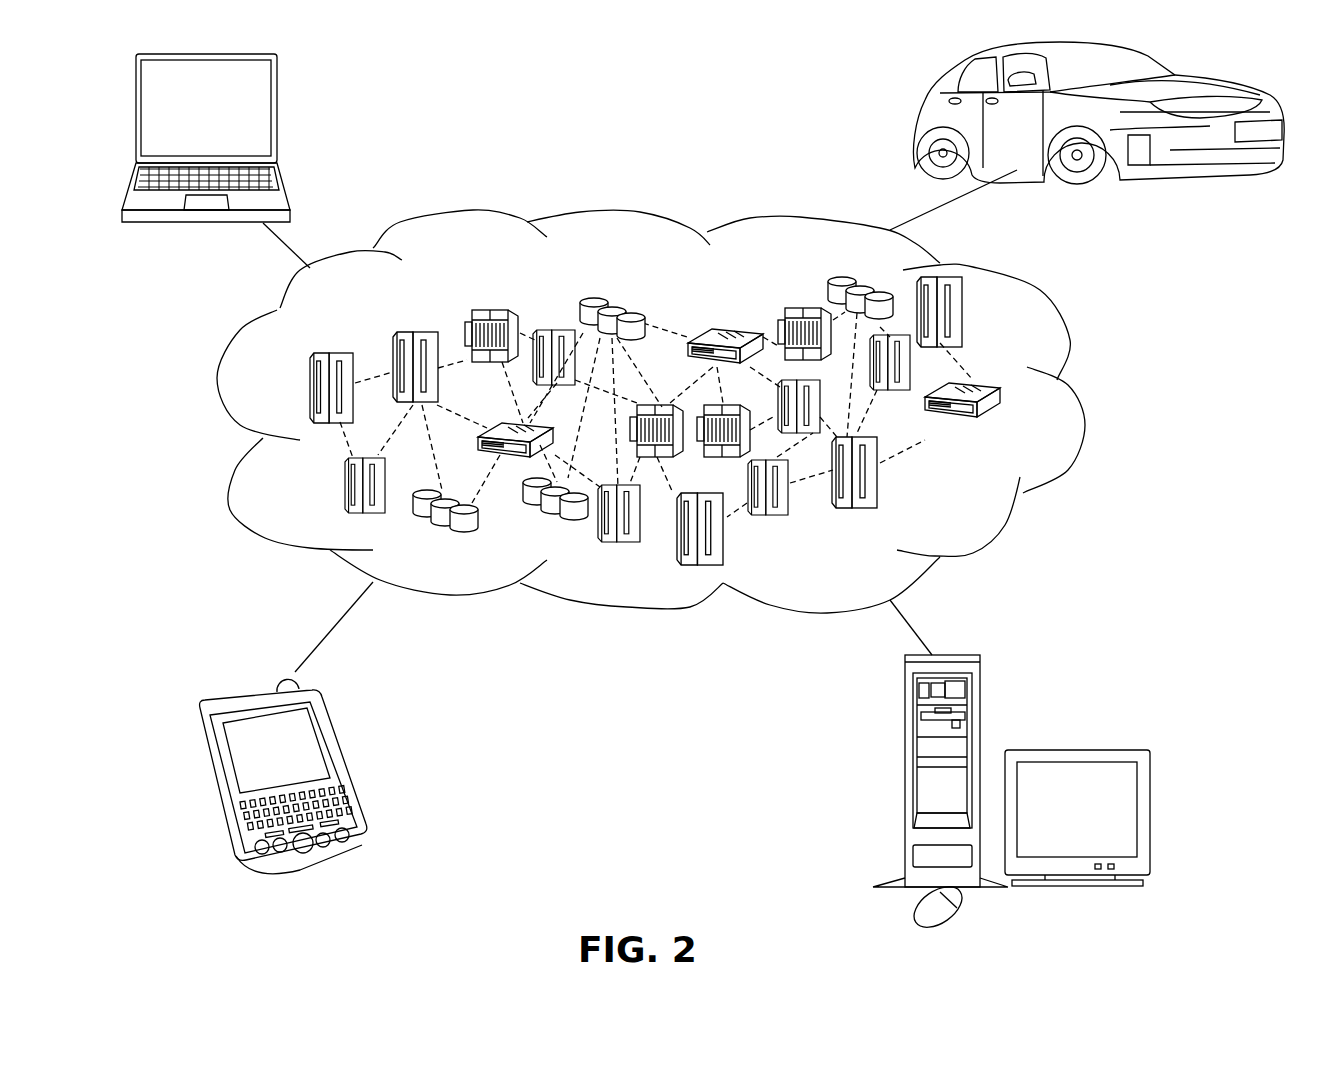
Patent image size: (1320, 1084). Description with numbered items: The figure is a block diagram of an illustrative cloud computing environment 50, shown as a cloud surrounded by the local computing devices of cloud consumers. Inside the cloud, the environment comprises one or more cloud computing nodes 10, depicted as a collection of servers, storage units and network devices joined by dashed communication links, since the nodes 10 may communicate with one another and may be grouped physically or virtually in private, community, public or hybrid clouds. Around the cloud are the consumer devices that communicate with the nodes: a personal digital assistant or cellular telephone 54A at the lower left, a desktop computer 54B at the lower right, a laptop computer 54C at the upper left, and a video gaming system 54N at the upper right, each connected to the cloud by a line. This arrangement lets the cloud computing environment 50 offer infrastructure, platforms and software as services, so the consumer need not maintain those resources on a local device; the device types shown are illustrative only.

The cloud computing node 10 is at (984, 506).
The cloud computing environment 50 is at (685, 411).
The personal digital assistant or cellular telephone 54A is at (330, 730).
The desktop computer 54B is at (903, 715).
The laptop computer 54C is at (278, 93).
The video gaming system 54N is at (918, 110).